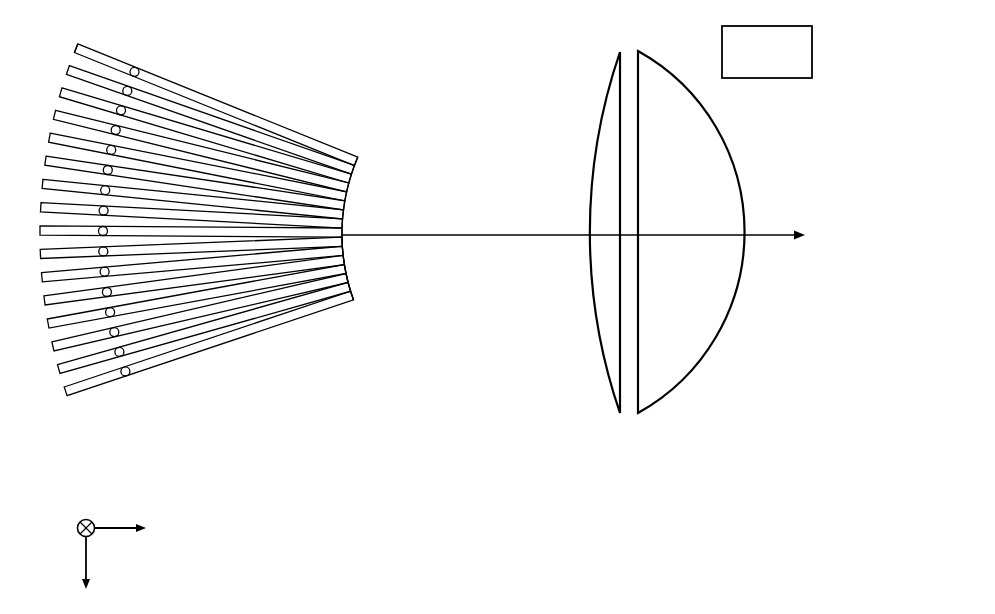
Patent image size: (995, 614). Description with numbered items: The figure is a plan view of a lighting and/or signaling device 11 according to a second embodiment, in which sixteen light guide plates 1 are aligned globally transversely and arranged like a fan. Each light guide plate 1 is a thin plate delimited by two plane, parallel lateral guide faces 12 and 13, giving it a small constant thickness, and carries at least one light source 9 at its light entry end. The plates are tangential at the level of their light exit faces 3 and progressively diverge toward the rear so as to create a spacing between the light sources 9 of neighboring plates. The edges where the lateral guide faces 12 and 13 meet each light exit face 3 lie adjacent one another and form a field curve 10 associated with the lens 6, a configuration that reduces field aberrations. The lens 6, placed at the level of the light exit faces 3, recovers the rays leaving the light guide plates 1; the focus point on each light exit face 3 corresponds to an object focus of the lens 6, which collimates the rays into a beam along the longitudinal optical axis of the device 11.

The light guide plate 1 is at (108, 388).
The light exit face 3 is at (353, 299).
The lens 6 is at (660, 417).
The light source 9 is at (137, 66).
The field curve 10 is at (368, 205).
The lighting and/or signaling device 11 is at (371, 82).
The lateral guide face 12 is at (152, 72).
The lateral guide face 13 is at (82, 57).